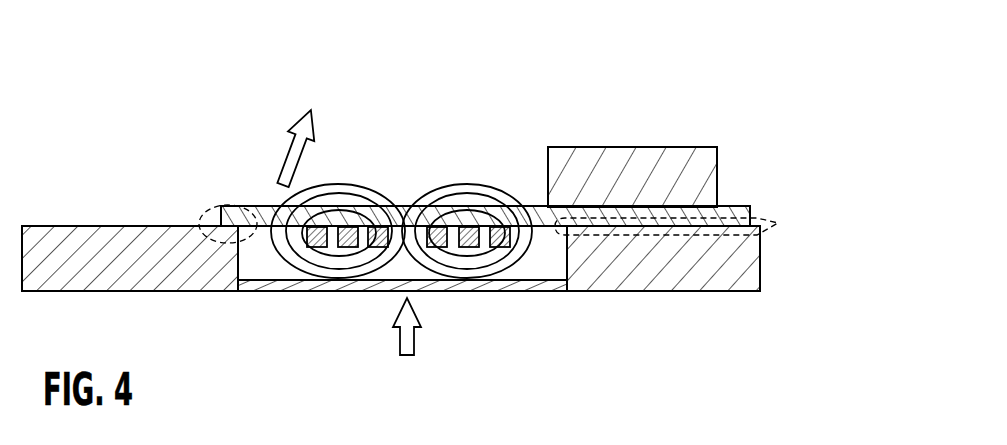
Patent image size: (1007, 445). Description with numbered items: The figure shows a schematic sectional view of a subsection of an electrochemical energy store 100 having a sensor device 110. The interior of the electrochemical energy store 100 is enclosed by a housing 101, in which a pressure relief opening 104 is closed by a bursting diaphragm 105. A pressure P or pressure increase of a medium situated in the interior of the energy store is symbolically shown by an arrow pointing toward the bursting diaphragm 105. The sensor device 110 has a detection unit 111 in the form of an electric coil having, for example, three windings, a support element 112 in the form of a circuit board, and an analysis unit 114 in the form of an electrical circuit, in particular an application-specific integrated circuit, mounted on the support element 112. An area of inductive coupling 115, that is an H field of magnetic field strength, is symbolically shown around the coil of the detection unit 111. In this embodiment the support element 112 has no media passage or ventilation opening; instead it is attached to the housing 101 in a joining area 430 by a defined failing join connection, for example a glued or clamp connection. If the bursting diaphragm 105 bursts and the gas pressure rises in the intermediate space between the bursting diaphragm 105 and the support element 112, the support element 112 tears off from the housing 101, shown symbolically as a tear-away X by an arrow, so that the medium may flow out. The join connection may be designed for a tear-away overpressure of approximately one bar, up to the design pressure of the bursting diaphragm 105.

The electrochemical energy store 100 is at (403, 203).
The housing 101 is at (117, 257).
The pressure relief opening 104 is at (547, 267).
The bursting diaphragm 105 is at (270, 291).
The sensor device 110 is at (401, 203).
The detection unit 111 is at (347, 247).
The support element 112 is at (727, 207).
The analysis unit 114 is at (633, 165).
The area of inductive coupling 115 is at (376, 189).
The joining area 430 is at (203, 217).
The tear-away X is at (296, 151).
The pressure P is at (413, 336).